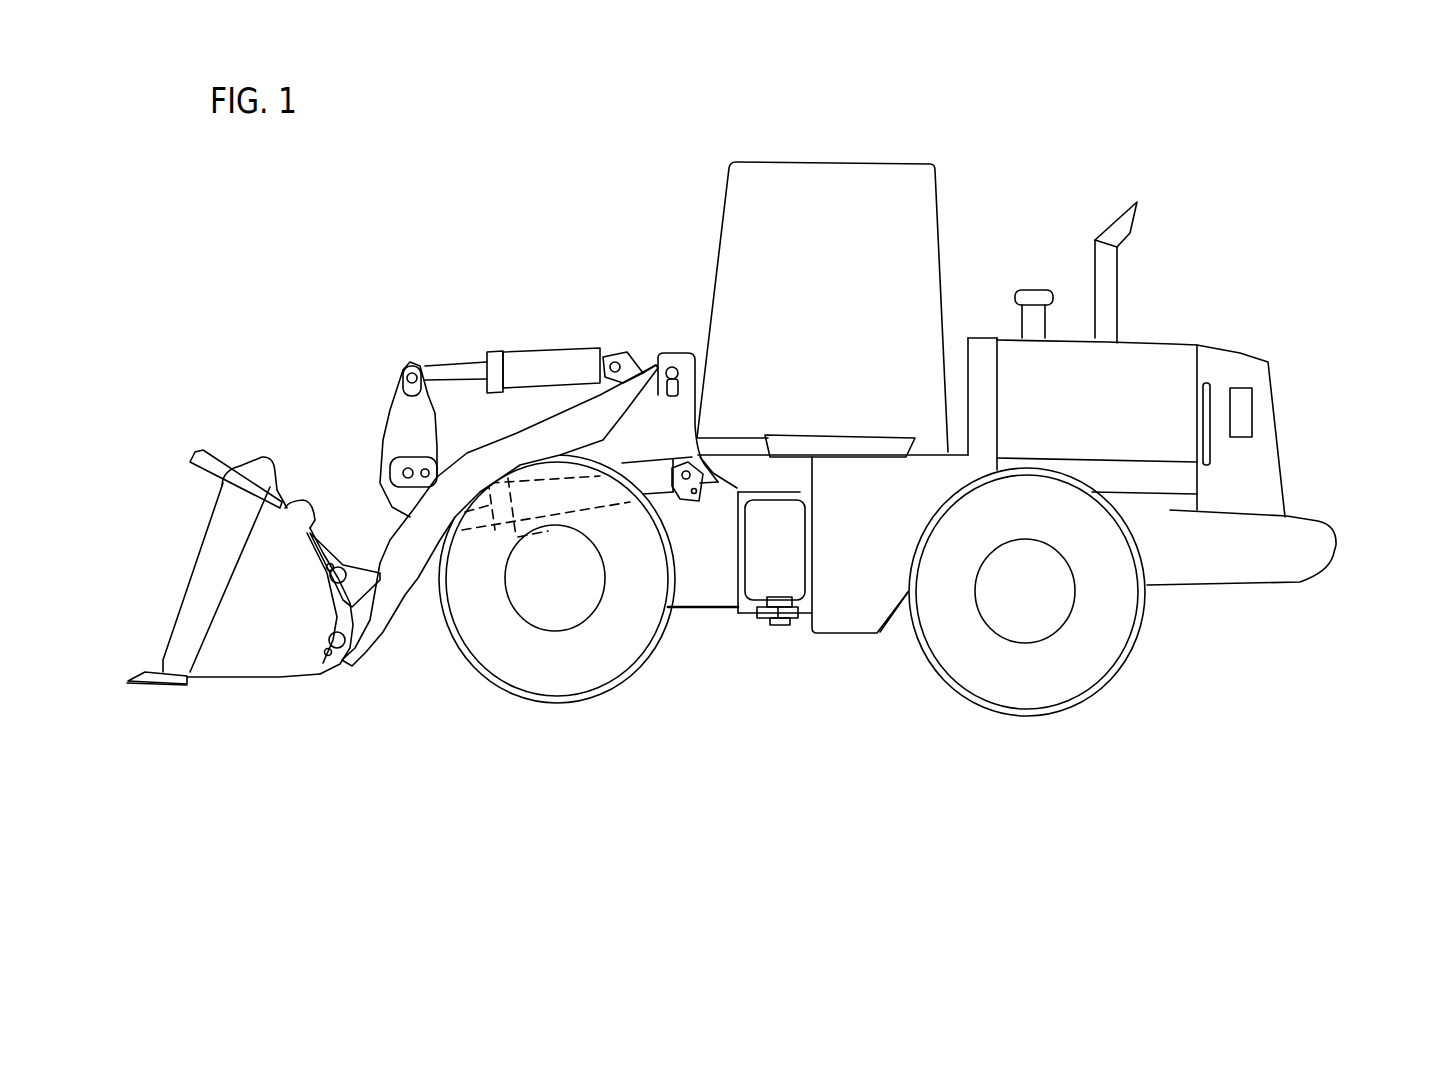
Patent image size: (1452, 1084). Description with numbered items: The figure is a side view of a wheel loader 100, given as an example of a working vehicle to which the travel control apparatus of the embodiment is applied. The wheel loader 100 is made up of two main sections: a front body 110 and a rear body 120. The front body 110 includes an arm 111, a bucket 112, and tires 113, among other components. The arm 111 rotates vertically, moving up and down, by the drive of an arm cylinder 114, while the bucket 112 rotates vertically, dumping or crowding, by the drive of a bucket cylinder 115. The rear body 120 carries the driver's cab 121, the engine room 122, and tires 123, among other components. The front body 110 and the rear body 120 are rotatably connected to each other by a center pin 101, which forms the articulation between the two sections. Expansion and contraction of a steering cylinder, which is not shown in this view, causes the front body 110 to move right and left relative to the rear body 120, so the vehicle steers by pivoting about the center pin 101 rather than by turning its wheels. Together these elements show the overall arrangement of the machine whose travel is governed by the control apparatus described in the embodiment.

The wheel loader 100 is at (1222, 613).
The center pin 101 is at (780, 626).
The front body 110 is at (655, 395).
The arm 111 is at (383, 547).
The bucket 112 is at (237, 480).
The tires 113 is at (543, 663).
The arm cylinder 114 is at (503, 530).
The bucket cylinder 115 is at (542, 356).
The rear body 120 is at (1303, 543).
The driver's cab 121 is at (775, 187).
The engine room 122 is at (1175, 365).
The tires 123 is at (1049, 681).